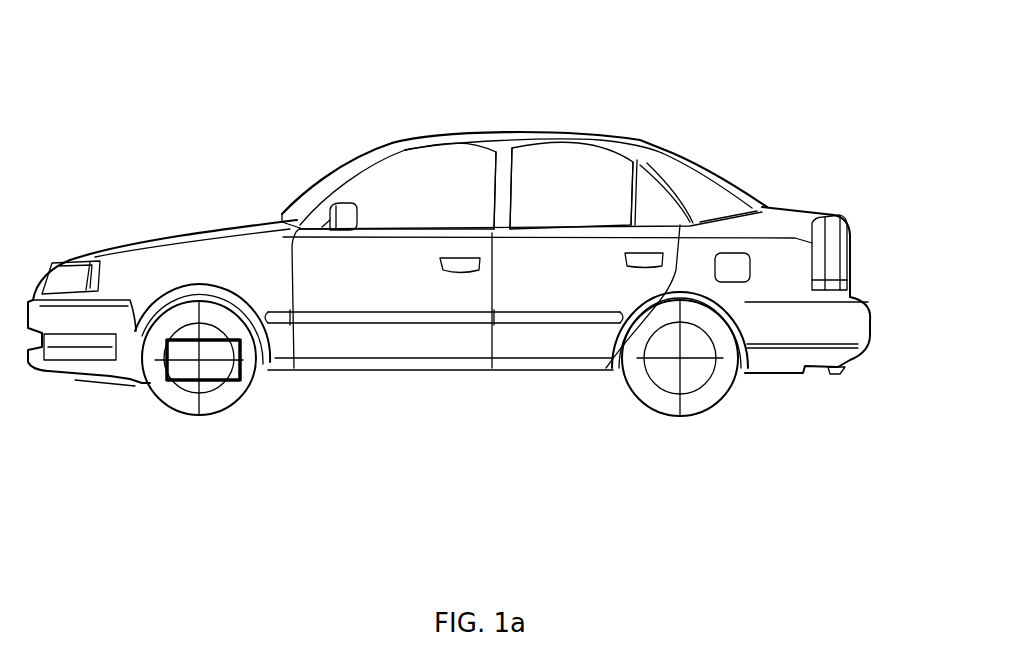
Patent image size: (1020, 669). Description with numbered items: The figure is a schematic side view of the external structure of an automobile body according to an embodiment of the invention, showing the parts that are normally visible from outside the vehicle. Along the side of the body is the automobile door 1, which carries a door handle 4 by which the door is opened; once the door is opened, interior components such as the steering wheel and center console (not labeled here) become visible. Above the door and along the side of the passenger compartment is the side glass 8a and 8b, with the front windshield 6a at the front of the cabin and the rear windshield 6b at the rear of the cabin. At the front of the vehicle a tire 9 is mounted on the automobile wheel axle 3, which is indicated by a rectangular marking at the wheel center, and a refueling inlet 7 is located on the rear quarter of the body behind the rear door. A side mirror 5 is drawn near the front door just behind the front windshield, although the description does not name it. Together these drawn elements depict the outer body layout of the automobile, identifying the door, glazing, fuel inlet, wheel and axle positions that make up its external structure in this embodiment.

The automobile door 1 is at (443, 350).
The automobile wheel axle 3 is at (198, 365).
The door handle 4 is at (453, 260).
The side mirror 5 is at (341, 223).
The front windshield 6a is at (287, 210).
The rear windshield 6b is at (707, 164).
The refueling inlet 7 is at (728, 267).
The side glass 8a is at (543, 217).
The side glass 8b is at (457, 190).
The tire 9 is at (162, 400).